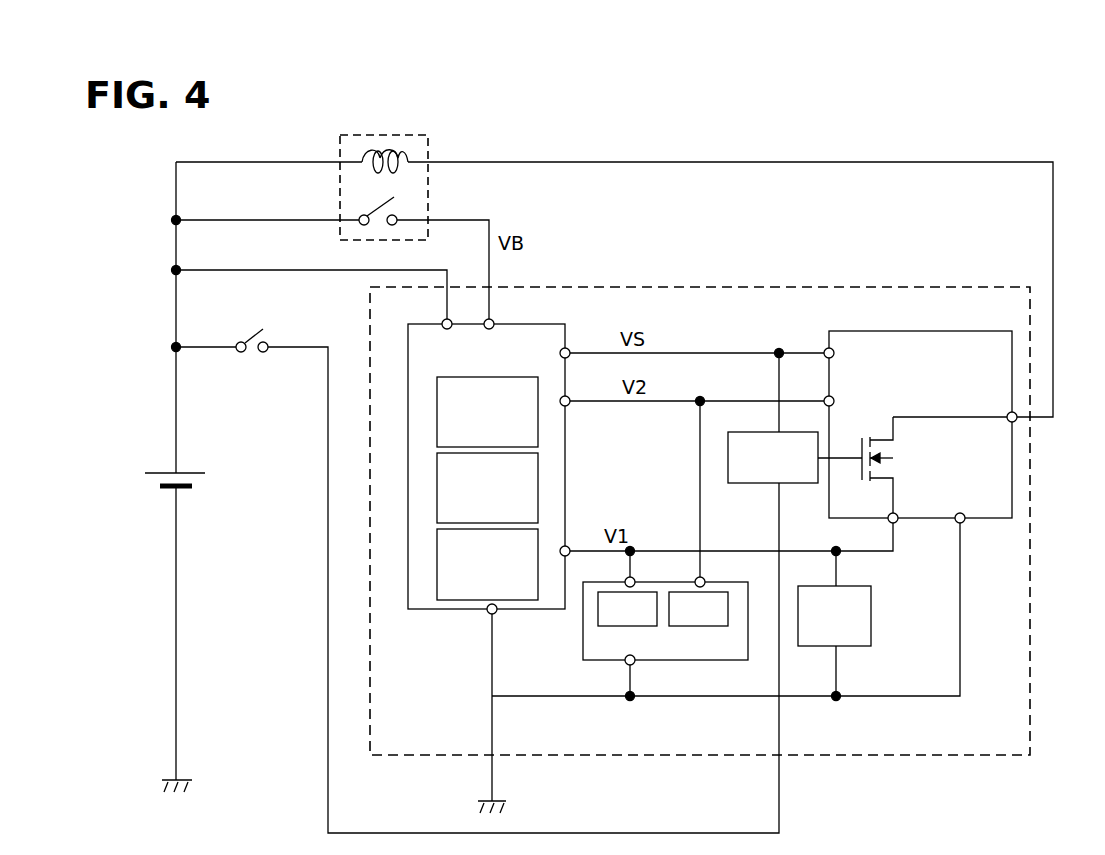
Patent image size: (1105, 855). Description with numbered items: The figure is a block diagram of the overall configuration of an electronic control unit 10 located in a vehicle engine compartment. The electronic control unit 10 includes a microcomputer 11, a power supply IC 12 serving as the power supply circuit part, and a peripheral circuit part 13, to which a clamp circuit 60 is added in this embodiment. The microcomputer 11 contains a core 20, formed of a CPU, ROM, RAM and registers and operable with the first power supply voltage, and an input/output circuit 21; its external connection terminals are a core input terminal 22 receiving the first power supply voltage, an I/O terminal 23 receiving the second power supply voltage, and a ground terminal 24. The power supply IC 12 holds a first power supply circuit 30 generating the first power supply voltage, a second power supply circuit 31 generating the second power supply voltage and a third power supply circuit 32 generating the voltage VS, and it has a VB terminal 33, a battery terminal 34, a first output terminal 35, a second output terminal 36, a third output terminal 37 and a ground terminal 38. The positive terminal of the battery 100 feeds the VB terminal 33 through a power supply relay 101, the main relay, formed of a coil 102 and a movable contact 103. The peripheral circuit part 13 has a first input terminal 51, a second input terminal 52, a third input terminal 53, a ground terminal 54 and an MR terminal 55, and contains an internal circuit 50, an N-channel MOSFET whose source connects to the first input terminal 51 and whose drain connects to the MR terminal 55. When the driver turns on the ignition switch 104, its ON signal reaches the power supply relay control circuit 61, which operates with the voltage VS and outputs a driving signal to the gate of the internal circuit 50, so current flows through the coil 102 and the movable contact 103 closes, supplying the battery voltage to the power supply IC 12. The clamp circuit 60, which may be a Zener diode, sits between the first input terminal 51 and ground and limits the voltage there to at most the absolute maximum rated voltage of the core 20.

The electronic control unit 10 is at (876, 286).
The microcomputer 11 is at (583, 648).
The power supply IC 12 is at (562, 318).
The peripheral circuit part 13 is at (972, 330).
The core 20 is at (598, 610).
The input/output circuit 21 is at (728, 610).
The core input terminal 22 is at (632, 581).
The I/O terminal 23 is at (702, 581).
The ground terminal 24 is at (634, 662).
The first power supply circuit 30 is at (437, 565).
The second power supply circuit 31 is at (437, 489).
The third power supply circuit 32 is at (437, 410).
The VB terminal 33 is at (495, 322).
The battery terminal 34 is at (442, 321).
The first output terminal 35 is at (568, 550).
The second output terminal 36 is at (569, 400).
The third output terminal 37 is at (569, 351).
The ground terminal 38 is at (490, 614).
The internal circuit 50 is at (864, 436).
The first input terminal 51 is at (896, 522).
The second input terminal 52 is at (826, 397).
The third input terminal 53 is at (826, 349).
The ground terminal 54 is at (963, 522).
The MR terminal 55 is at (1018, 421).
The clamp circuit 60 is at (871, 614).
The power supply relay control circuit 61 is at (750, 484).
The battery 100 is at (150, 472).
The power supply relay 101 is at (413, 136).
The coil 102 is at (371, 152).
The movable contact 103 is at (397, 202).
The ignition switch 104 is at (256, 334).